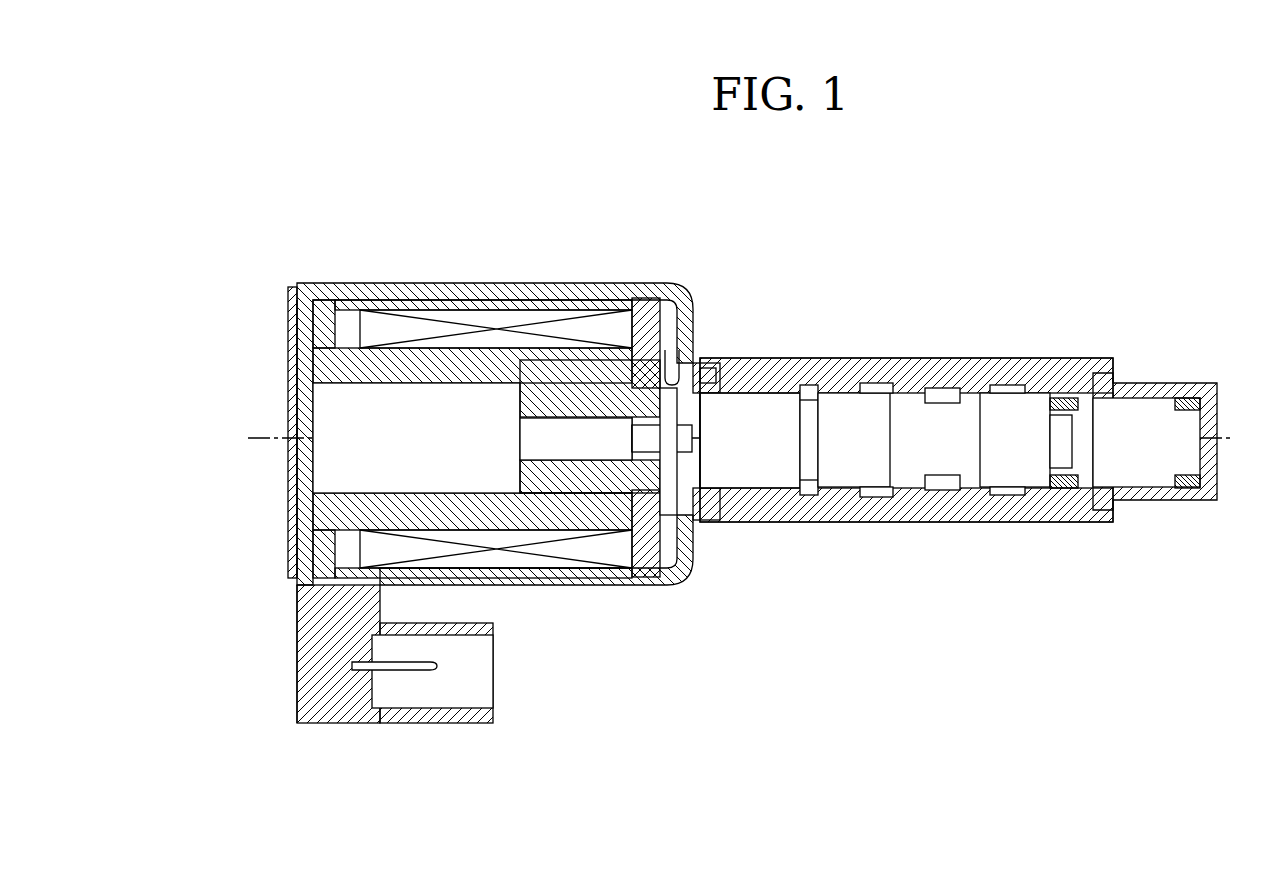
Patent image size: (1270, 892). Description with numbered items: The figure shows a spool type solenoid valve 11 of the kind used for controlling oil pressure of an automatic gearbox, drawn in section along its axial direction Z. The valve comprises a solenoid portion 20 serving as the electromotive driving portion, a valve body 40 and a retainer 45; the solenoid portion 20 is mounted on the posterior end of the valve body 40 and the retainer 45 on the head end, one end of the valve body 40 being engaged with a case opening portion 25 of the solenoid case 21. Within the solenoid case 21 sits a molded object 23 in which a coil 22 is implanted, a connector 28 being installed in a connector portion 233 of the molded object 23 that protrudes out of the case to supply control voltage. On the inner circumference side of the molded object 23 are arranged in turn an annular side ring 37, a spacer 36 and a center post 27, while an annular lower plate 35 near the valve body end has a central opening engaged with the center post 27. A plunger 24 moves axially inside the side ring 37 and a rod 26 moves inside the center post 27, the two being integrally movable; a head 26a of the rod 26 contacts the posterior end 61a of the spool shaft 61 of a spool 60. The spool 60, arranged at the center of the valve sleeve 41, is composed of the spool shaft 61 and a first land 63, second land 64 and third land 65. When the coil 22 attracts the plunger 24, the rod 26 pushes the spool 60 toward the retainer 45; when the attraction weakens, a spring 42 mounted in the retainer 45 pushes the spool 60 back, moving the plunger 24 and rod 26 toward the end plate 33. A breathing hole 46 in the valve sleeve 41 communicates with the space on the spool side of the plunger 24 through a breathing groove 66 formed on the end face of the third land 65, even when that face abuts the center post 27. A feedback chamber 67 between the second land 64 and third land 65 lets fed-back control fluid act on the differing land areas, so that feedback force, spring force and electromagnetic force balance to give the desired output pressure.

The solenoid valve 11 is at (1062, 648).
The solenoid portion 20 is at (412, 285).
The solenoid case 21 is at (500, 303).
The coil 22 is at (525, 318).
The molded object 23 is at (305, 605).
The connector portion 233 is at (320, 690).
The plunger 24 is at (355, 398).
The case opening portion 25 is at (712, 363).
The rod 26 is at (590, 400).
The head 26a is at (620, 590).
The center post 27 is at (600, 560).
The connector 28 is at (483, 675).
The end plate 33 is at (292, 345).
The lower plate 35 is at (645, 320).
The spacer 36 is at (480, 365).
The side ring 37 is at (298, 287).
The valve body 40 is at (918, 355).
The valve sleeve 41 is at (840, 520).
The spring 42 is at (1065, 500).
The retainer 45 is at (1170, 388).
The breathing hole 46 is at (705, 360).
The spool 60 is at (662, 588).
The spool shaft 61 is at (670, 452).
The posterior end 61a is at (640, 420).
The first land 63 is at (1020, 420).
The second land 64 is at (850, 408).
The third land 65 is at (757, 410).
The breathing groove 66 is at (722, 400).
The feedback chamber 67 is at (840, 520).
The axial direction Z is at (268, 438).